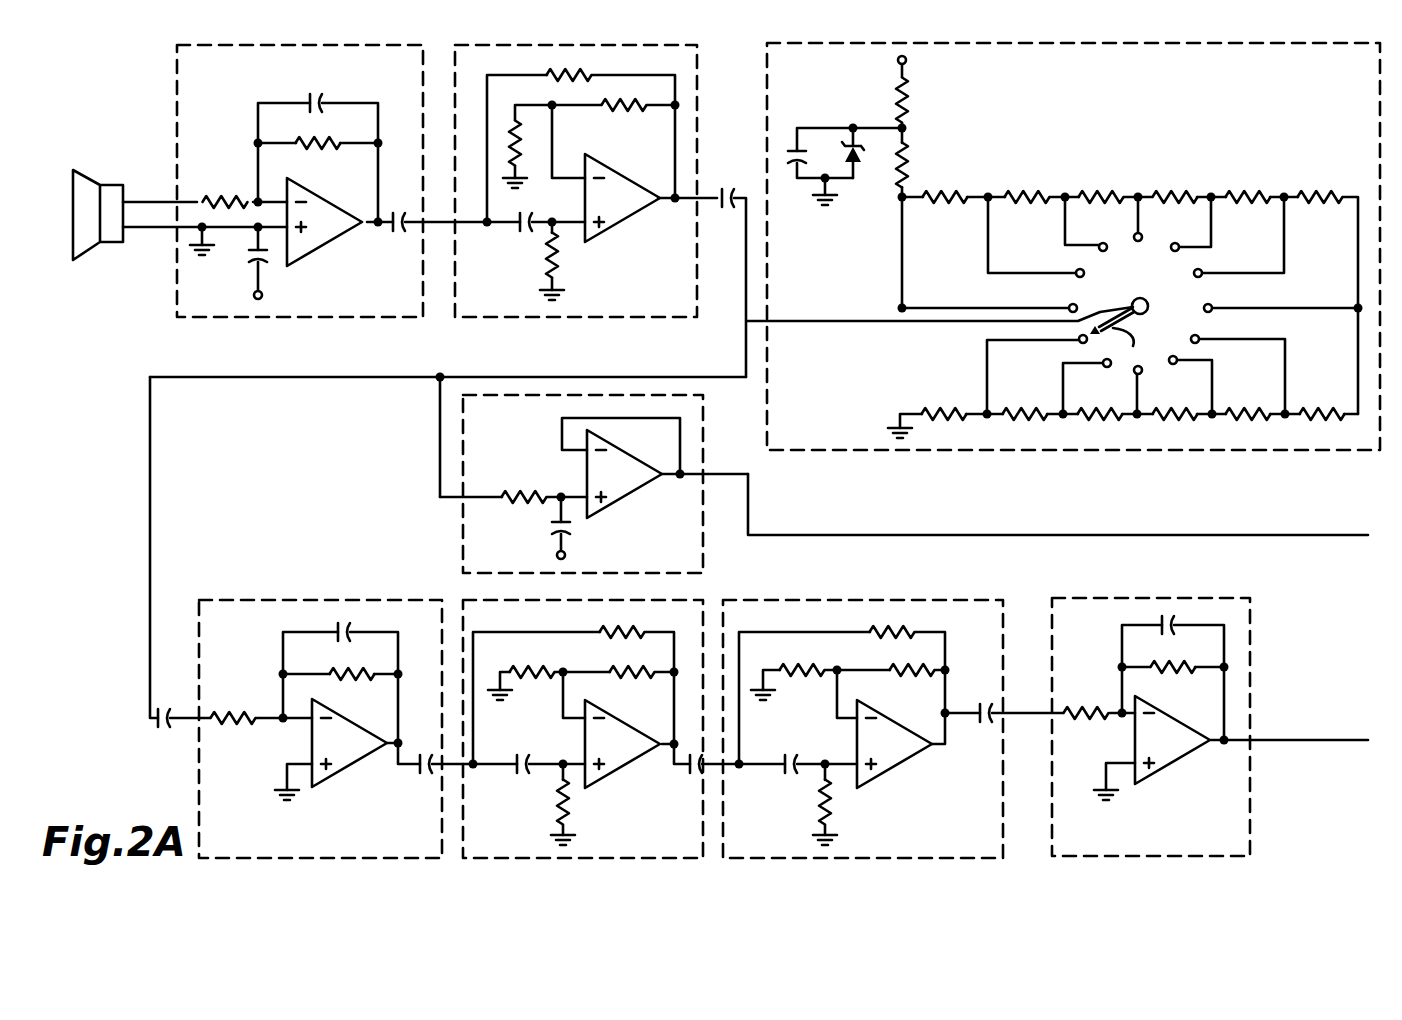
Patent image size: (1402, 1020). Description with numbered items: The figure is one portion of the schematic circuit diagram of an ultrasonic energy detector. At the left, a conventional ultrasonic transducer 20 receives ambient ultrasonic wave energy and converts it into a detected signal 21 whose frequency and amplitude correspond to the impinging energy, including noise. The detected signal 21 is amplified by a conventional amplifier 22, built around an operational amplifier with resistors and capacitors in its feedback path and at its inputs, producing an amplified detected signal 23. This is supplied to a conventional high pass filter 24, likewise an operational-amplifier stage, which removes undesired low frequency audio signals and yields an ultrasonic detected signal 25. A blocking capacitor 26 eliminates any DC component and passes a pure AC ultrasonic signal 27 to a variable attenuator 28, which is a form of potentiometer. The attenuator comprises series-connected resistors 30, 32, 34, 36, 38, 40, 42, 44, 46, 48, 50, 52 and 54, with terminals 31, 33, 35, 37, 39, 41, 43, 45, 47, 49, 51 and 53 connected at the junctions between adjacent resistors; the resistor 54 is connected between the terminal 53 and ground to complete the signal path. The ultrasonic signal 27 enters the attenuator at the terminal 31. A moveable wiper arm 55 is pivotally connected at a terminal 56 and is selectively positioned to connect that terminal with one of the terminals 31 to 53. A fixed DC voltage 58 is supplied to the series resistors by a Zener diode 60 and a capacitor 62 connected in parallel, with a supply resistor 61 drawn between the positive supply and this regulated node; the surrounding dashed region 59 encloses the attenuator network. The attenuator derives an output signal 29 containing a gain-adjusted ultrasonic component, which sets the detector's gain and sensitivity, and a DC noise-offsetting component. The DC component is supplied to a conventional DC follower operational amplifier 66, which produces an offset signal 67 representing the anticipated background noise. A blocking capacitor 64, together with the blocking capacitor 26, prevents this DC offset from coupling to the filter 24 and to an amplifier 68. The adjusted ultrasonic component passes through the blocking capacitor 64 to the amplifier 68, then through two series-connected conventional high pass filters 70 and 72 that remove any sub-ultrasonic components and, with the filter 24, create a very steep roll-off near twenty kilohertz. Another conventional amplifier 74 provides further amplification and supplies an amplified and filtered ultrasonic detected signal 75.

The ultrasonic transducer 20 is at (99, 182).
The detected signal 21 is at (143, 228).
The amplifier 22 is at (227, 319).
The amplified detected signal 23 is at (428, 224).
The high pass filter 24 is at (471, 319).
The ultrasonic detected signal 25 is at (718, 201).
The blocking capacitor 26 is at (740, 204).
The ultrasonic signal 27 is at (838, 307).
The variable attenuator 28 is at (1123, 405).
The output signal 29 is at (638, 365).
The resistor 30 is at (908, 142).
The terminal 31 is at (1068, 306).
The resistor 32 is at (968, 195).
The terminal 33 is at (1077, 271).
The resistor 34 is at (1046, 195).
The terminal 35 is at (1103, 245).
The resistor 36 is at (1120, 195).
The terminal 37 is at (1143, 238).
The resistor 38 is at (1193, 195).
The terminal 39 is at (1185, 250).
The resistor 40 is at (1268, 195).
The terminal 41 is at (1210, 272).
The resistor 42 is at (1340, 195).
The terminal 43 is at (1214, 306).
The resistor 44 is at (1310, 411).
The terminal 45 is at (1205, 338).
The resistor 46 is at (1237, 411).
The terminal 47 is at (1185, 358).
The resistor 48 is at (1167, 411).
The terminal 49 is at (1068, 369).
The resistor 50 is at (1120, 396).
The terminal 51 is at (1118, 362).
The resistor 52 is at (1025, 411).
The terminal 53 is at (1078, 335).
The resistor 54 is at (942, 411).
The moveable wiper arm 55 is at (1101, 317).
The terminal 56 is at (1147, 299).
The fixed DC voltage 58 is at (899, 127).
The gain setting network 59 is at (1045, 273).
The Zener diode 60 is at (860, 150).
The resistor 61 is at (909, 86).
The capacitor 62 is at (793, 148).
The blocking capacitor 64 is at (169, 717).
The DC follower operational amplifier 66 is at (467, 519).
The offset signal 67 is at (829, 535).
The amplifier 68 is at (254, 592).
The high pass filter 70 is at (469, 594).
The high pass filter 72 is at (827, 594).
The amplifier 74 is at (1122, 560).
The amplified and filtered ultrasonic detected signal 75 is at (1290, 740).